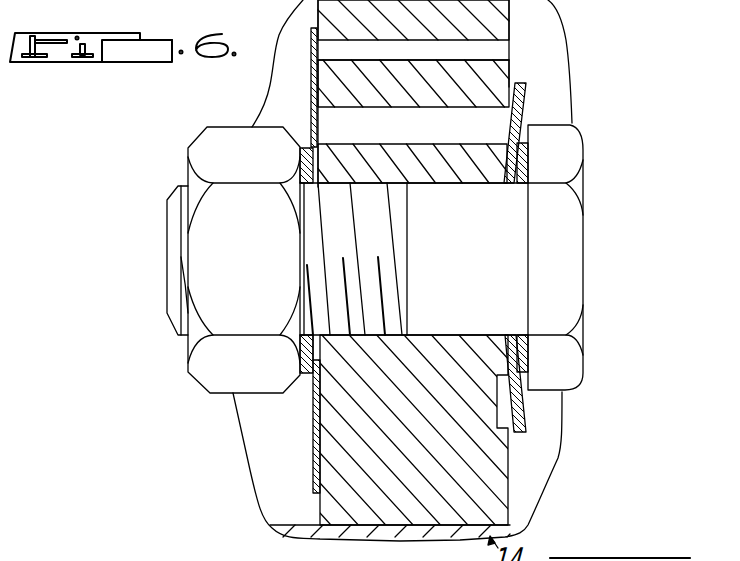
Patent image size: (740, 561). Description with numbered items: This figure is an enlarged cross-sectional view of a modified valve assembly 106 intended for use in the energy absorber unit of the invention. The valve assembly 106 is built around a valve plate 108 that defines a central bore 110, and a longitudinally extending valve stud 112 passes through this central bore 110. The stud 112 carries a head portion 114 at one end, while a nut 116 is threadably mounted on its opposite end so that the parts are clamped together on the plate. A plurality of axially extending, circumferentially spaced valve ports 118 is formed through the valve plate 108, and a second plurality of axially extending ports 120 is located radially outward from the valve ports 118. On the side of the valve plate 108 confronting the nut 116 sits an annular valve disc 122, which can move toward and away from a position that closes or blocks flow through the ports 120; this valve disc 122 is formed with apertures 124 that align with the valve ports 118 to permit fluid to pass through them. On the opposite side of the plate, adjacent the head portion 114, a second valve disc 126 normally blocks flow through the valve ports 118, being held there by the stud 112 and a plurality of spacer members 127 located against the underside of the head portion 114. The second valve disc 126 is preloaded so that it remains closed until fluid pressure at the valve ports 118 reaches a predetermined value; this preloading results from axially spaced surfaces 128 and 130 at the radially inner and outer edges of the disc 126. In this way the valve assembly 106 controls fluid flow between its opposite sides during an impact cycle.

The valve assembly 106 is at (520, 477).
The valve plate 108 is at (348, 497).
The central bore 110 is at (427, 338).
The valve stud 112 is at (167, 280).
The head portion 114 is at (566, 223).
The nut 116 is at (217, 152).
The valve ports 118 is at (455, 95).
The ports 120 is at (468, 40).
The annular valve disc 122 is at (310, 83).
The apertures 124 is at (318, 115).
The second valve disc 126 is at (520, 100).
The spacer members 127 is at (522, 184).
The axially spaced surface 128 is at (516, 335).
The axially spaced surface 130 is at (513, 440).